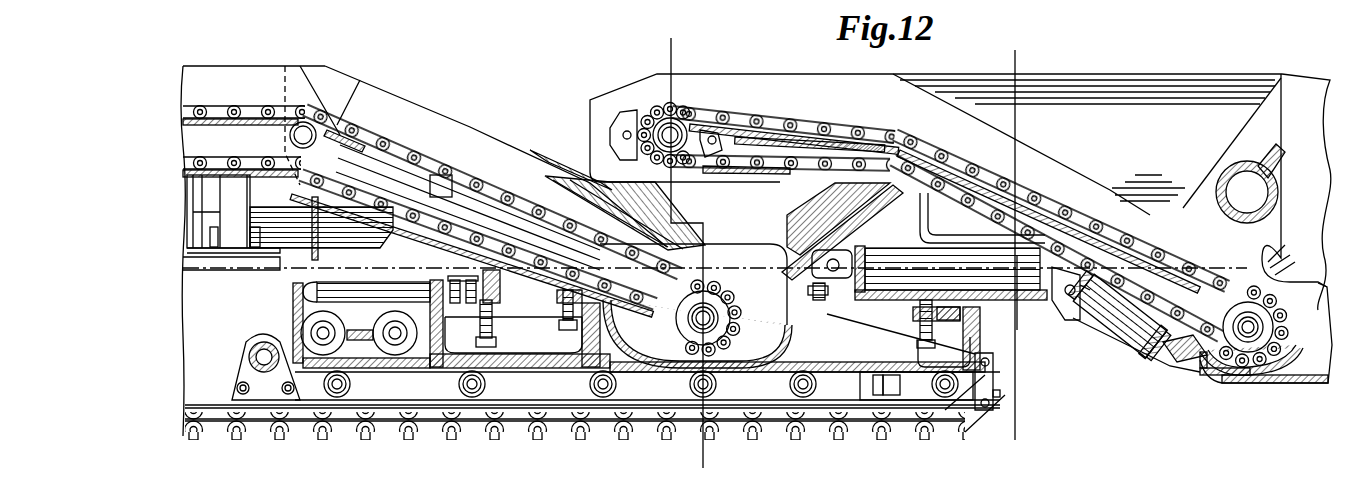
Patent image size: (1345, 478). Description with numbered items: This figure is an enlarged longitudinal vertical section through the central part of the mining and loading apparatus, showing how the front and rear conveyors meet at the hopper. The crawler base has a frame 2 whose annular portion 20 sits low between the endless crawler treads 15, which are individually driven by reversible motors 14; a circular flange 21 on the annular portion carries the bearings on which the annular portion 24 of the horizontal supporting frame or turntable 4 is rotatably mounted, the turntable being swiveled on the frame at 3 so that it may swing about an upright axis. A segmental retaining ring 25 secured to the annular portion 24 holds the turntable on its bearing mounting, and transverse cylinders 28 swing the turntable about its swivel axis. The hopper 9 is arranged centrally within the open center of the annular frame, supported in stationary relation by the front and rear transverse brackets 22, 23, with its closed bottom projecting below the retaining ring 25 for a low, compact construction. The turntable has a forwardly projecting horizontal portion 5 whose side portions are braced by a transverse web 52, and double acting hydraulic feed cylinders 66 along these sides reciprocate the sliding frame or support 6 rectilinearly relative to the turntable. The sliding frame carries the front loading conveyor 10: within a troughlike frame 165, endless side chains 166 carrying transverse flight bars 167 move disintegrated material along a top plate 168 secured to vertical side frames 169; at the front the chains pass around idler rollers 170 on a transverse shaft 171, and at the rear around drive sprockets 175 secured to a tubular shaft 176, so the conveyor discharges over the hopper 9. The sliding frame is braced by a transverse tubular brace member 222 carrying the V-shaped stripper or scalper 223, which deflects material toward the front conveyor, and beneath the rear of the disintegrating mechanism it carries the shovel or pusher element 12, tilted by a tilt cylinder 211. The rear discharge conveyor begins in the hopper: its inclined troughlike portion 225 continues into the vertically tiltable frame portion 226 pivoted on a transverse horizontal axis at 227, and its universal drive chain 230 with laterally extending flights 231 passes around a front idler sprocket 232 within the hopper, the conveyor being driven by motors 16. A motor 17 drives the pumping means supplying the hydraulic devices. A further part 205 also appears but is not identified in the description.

The vertically tiltable rearward troughlike frame portion 226 is at (262, 70).
The inclined rearward troughlike portion 225 is at (463, 124).
The transverse horizontal pivot axis 227 is at (345, 124).
The laterally extending flights 231 is at (375, 134).
The universal drive chain 230 is at (440, 165).
The reversible motors 14 is at (282, 232).
The motor 17 is at (268, 268).
The annular portion of swiveled supporting frame 24 is at (483, 272).
The circular flange 21 is at (557, 316).
The segmental retaining ring 25 is at (582, 302).
The transverse cylinders 28 is at (291, 366).
The rear transverse bracket 23 is at (545, 312).
The front transverse bracket 22 is at (822, 318).
The front idler sprocket 232 is at (715, 298).
The endless crawler treads 15 is at (671, 45).
The motors 16 is at (1015, 50).
The hopper 9 is at (880, 200).
The double acting hydraulic feed cylinders 66 is at (887, 250).
The troughlike frame 165 is at (858, 84).
The tubular shaft 176 is at (686, 117).
The drive sprockets 175 is at (683, 150).
The transverse flight bars 167 is at (843, 131).
The top plate 168 is at (957, 166).
The endless side chains 166 is at (917, 153).
The front idler rollers 170 is at (1218, 343).
The vertical side frames 169 is at (1045, 155).
The front loading conveyor 10 is at (1057, 188).
The sliding frame 6 is at (1286, 74).
The transverse tubular brace member 222 is at (1218, 201).
The stripper 223 is at (1272, 145).
The transverse shaft 171 is at (1250, 352).
The mounting plate 205 is at (1187, 352).
The tilt cylinder 211 is at (1100, 333).
The horizontal portion 5 is at (1083, 328).
The transverse horizontal web 52 is at (1069, 321).
The shovel 12 is at (1298, 373).
The annular portion 20 is at (992, 364).
The frame 2 is at (985, 351).
The swivel 3 is at (986, 335).
The horizontal supporting frame or turntable 4 is at (975, 304).